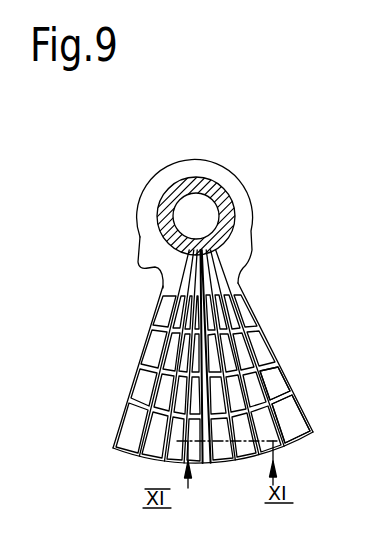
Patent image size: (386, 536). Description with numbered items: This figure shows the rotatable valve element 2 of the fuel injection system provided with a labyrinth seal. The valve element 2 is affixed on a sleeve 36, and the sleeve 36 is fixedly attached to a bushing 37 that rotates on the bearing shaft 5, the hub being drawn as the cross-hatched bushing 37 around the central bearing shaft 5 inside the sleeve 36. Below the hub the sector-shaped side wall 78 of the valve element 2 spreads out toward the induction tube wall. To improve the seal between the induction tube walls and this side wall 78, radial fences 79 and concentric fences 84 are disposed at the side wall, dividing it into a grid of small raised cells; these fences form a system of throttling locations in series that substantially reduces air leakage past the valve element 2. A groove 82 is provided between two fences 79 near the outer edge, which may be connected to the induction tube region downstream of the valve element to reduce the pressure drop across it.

The valve element 2 is at (138, 387).
The bearing shaft 5 is at (189, 222).
The sleeve 36 is at (185, 168).
The bushing 37 is at (220, 187).
The side wall 78 is at (284, 372).
The radial fences 79 is at (133, 450).
The groove 82 is at (218, 448).
The concentric fences 84 is at (272, 352).